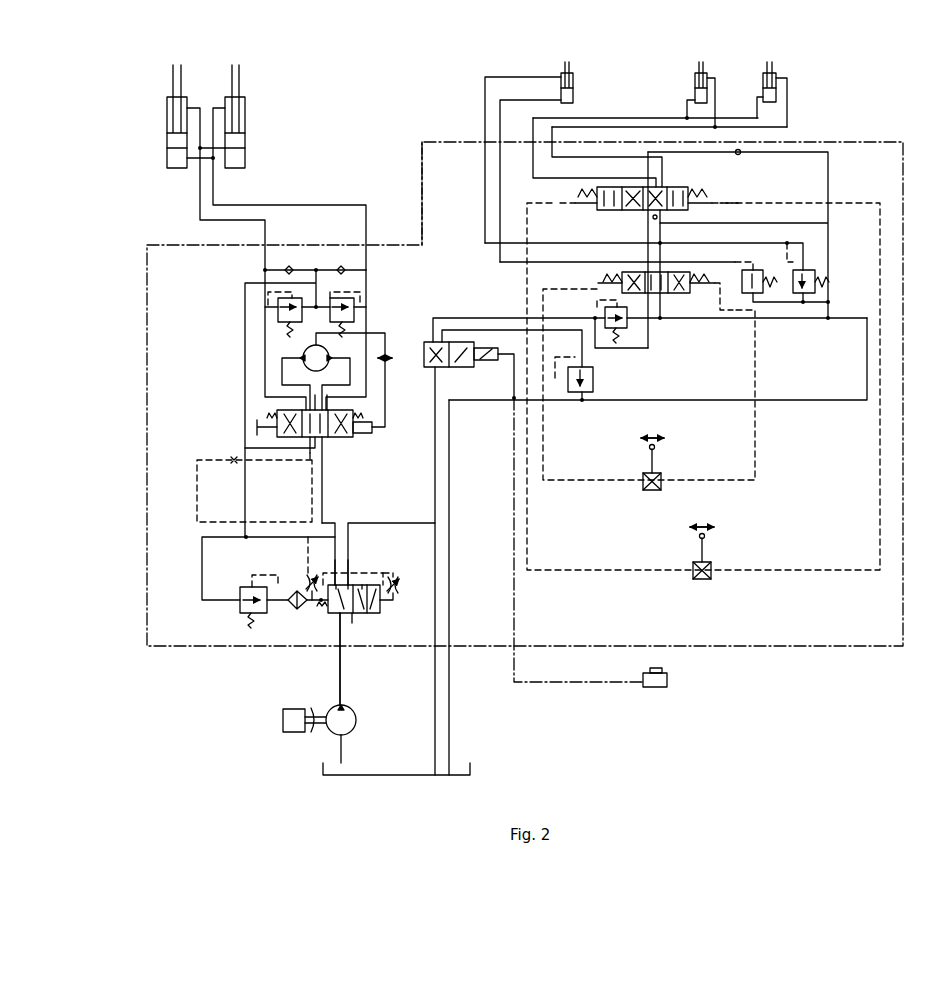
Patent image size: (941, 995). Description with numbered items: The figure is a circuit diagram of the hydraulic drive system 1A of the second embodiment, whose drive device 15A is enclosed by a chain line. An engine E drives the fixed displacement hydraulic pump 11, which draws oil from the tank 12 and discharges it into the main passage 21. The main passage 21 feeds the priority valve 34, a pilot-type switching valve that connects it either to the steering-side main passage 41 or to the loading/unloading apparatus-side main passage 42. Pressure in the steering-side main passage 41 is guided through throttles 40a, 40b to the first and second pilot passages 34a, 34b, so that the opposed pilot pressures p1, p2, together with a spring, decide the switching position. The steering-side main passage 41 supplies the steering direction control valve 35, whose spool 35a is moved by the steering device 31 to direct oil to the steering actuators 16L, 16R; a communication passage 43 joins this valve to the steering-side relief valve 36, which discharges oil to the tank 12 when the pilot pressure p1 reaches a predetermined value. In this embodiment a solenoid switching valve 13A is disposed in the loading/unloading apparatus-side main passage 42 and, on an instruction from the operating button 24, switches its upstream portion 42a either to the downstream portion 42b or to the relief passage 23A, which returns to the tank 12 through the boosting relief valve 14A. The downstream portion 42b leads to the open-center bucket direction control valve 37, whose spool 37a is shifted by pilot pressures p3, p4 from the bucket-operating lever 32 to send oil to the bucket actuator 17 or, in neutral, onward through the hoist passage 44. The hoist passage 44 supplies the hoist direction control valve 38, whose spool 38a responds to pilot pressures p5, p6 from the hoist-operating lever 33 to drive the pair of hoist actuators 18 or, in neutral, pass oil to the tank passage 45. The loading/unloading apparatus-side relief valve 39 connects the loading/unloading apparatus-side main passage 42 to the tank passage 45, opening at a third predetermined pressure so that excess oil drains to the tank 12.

The hydraulic drive system 1A is at (890, 92).
The hydraulic pump 11 is at (356, 728).
The tank 12 is at (388, 777).
The solenoid switching valve 13A is at (422, 355).
The boosting relief valve 14A is at (595, 378).
The drive device 15A is at (452, 140).
The steering actuator 16L is at (167, 137).
The steering actuator 16R is at (245, 137).
The bucket actuator 17 is at (574, 90).
The hoist actuator 18 is at (695, 90).
The main passage 21 is at (342, 680).
The relief passage 23A is at (478, 327).
The operating button 24 is at (657, 690).
The steering device 31 is at (302, 351).
The bucket-operating lever 32 is at (657, 460).
The hoist-operating lever 33 is at (706, 552).
The priority valve 34 is at (353, 616).
The first pilot passage 34a is at (333, 578).
The second pilot passage 34b is at (393, 577).
The steering direction control valve 35 is at (335, 440).
The spool 35a is at (352, 433).
The steering-side relief valve 36 is at (240, 605).
The bucket direction control valve 37 is at (672, 295).
The spool 37a is at (681, 295).
The hoist direction control valve 38 is at (607, 220).
The spool 38a is at (626, 210).
The loading/unloading apparatus-side relief valve 39 is at (630, 326).
The throttle 40a is at (310, 577).
The throttle 40b is at (400, 585).
The steering-side main passage 41 is at (324, 500).
The loading/unloading apparatus-side main passage 42 is at (405, 523).
The upstream portion 42a is at (422, 437).
The downstream portion 42b is at (500, 315).
The communication passage 43 is at (255, 523).
The hoist passage 44 is at (656, 238).
The tank passage 45 is at (806, 155).
The engine E is at (290, 733).
The pilot pressure p1 is at (320, 605).
The pilot pressure p2 is at (392, 606).
The pilot pressure p3 is at (566, 310).
The pilot pressure p4 is at (733, 313).
The pilot pressure p5 is at (546, 207).
The pilot pressure p6 is at (797, 200).